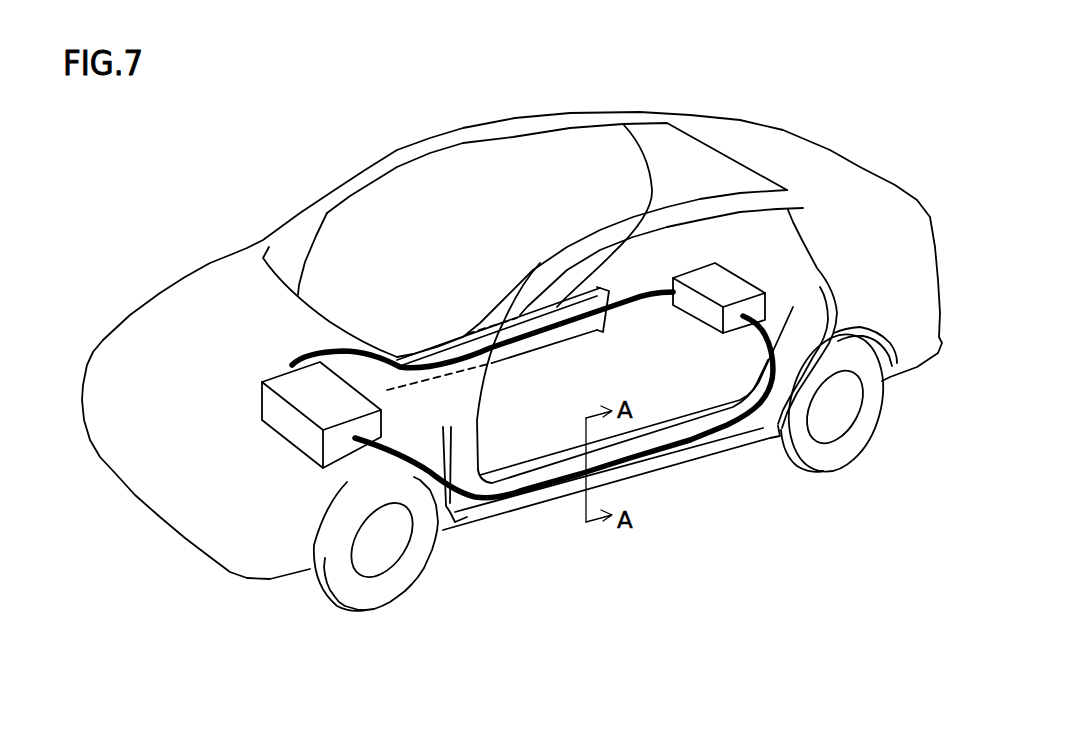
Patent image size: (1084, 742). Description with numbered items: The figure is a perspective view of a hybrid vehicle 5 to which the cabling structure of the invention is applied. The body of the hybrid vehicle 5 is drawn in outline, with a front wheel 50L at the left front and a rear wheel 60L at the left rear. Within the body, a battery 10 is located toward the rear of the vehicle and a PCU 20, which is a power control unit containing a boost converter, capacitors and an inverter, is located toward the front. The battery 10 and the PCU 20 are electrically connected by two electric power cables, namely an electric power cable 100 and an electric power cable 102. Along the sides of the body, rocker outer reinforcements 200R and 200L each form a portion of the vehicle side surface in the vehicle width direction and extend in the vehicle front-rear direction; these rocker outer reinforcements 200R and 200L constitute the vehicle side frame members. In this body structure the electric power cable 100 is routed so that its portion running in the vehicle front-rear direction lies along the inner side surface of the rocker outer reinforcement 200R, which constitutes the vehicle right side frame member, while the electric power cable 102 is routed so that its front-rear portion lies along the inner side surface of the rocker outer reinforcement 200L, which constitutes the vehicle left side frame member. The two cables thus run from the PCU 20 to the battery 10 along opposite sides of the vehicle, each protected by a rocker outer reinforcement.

The hybrid vehicle 5 is at (342, 113).
The battery 10 is at (727, 280).
The PCU (Power Control Unit) 20 is at (261, 398).
The front wheel 50L is at (387, 592).
The rear wheel 60L is at (830, 455).
The electric power cable 100 is at (557, 307).
The electric power cable 102 is at (530, 490).
The rocker outer reinforcement 200L is at (667, 460).
The rocker outer reinforcement 200R is at (437, 340).